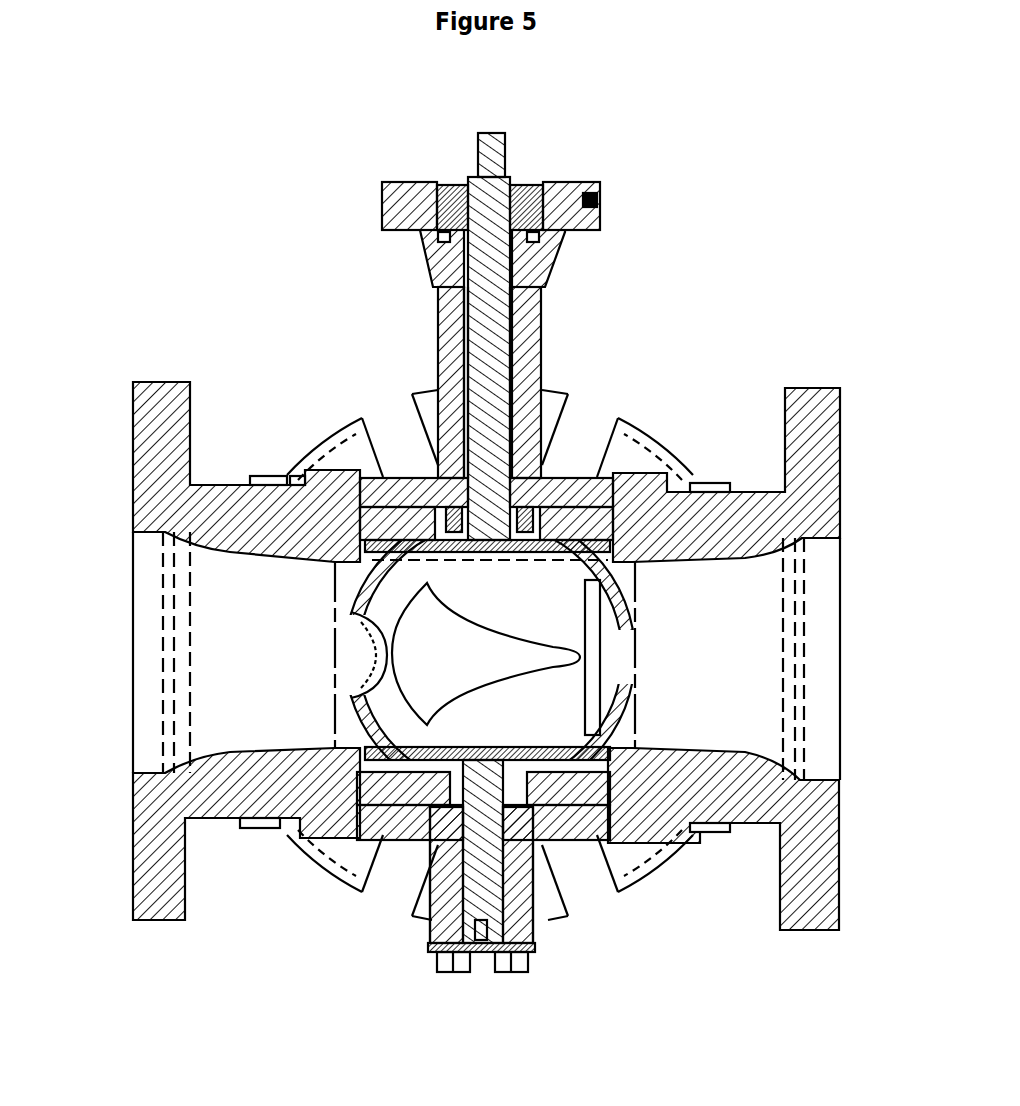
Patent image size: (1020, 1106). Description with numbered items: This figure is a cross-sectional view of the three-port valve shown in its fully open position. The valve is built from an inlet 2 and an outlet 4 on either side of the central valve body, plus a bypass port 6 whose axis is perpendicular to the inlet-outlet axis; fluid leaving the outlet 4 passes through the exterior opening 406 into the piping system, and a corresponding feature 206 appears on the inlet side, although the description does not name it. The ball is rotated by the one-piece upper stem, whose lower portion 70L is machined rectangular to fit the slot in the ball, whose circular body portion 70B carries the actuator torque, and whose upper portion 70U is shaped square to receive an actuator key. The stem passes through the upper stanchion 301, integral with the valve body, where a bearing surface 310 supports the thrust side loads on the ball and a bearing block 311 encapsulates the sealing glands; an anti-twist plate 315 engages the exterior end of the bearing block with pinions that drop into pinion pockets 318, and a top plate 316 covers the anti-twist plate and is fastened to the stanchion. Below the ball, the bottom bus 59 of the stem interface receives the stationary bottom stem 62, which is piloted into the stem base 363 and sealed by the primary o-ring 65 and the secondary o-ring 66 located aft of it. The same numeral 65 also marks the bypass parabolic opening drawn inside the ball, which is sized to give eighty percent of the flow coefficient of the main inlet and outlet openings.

The inlet 2 is at (770, 372).
The outlet 4 is at (216, 362).
The bypass port 6 is at (647, 462).
The bottom bus 59 is at (535, 840).
The bottom stem 62 is at (542, 907).
The bottom stem primary o-ring 65 is at (462, 878).
The secondary o-ring 66 is at (462, 905).
The upper portion of stem 70U is at (502, 152).
The stem body portion 70B is at (440, 350).
The lower portion of stem 70L is at (520, 462).
The right pipe flange 206 is at (840, 660).
The upper stanchion 301 is at (540, 380).
The bearing surface 310 is at (425, 450).
The bearing block 311 is at (545, 275).
The anti-twist plate 315 is at (430, 225).
The top plate 316 is at (566, 185).
The pinion pockets 318 is at (428, 253).
The stem base 363 is at (432, 952).
The exterior opening of outlet 406 is at (128, 650).